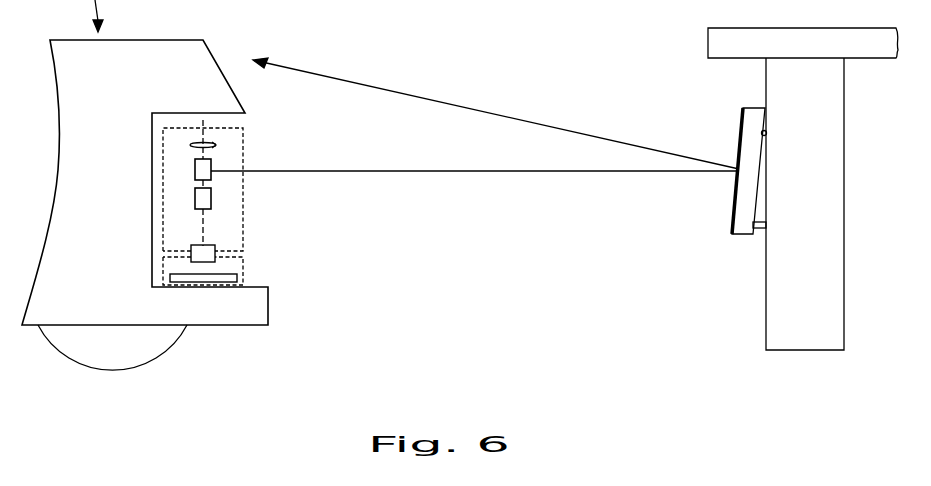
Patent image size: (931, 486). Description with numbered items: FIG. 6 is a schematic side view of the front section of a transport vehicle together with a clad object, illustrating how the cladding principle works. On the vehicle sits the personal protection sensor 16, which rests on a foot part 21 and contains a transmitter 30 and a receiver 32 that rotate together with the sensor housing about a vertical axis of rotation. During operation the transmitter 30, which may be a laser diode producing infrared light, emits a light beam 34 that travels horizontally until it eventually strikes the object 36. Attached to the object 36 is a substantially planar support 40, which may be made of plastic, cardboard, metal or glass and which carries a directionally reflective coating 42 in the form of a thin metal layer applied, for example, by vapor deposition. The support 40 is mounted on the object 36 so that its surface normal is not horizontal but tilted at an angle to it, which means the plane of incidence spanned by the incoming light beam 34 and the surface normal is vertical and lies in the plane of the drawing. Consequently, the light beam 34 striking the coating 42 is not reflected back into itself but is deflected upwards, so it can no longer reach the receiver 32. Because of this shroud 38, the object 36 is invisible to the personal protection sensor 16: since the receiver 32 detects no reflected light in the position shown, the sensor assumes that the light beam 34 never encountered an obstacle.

The personal protection sensor 16 is at (247, 223).
The foot part 21 is at (243, 278).
The transmitter 30 is at (211, 167).
The receiver 32 is at (211, 199).
The light beam 34 is at (402, 172).
The object 36 is at (840, 252).
The shroud 38 is at (736, 132).
The support 40 is at (742, 235).
The directionally reflective coating 42 is at (733, 213).